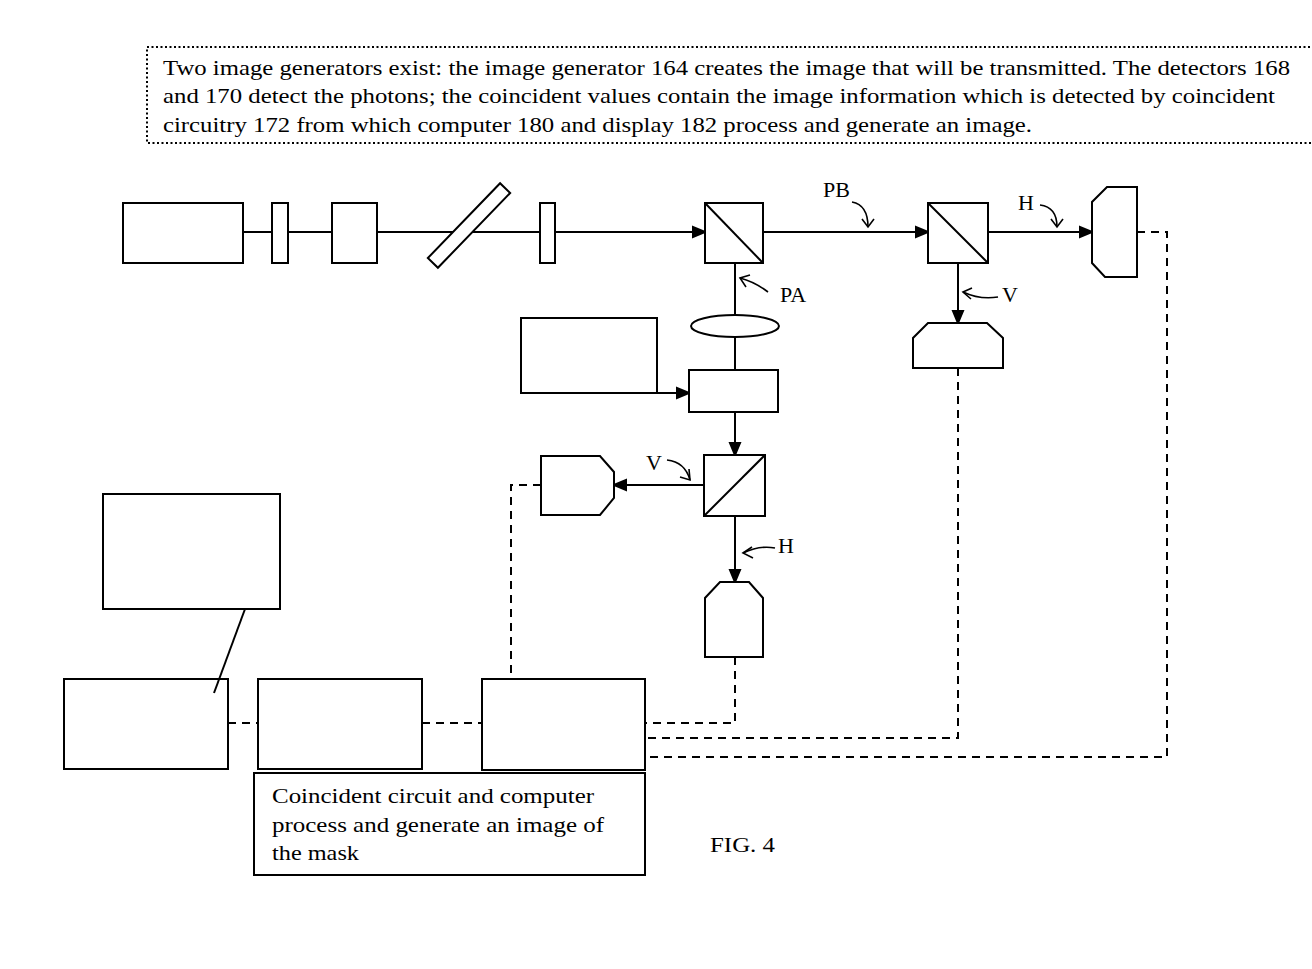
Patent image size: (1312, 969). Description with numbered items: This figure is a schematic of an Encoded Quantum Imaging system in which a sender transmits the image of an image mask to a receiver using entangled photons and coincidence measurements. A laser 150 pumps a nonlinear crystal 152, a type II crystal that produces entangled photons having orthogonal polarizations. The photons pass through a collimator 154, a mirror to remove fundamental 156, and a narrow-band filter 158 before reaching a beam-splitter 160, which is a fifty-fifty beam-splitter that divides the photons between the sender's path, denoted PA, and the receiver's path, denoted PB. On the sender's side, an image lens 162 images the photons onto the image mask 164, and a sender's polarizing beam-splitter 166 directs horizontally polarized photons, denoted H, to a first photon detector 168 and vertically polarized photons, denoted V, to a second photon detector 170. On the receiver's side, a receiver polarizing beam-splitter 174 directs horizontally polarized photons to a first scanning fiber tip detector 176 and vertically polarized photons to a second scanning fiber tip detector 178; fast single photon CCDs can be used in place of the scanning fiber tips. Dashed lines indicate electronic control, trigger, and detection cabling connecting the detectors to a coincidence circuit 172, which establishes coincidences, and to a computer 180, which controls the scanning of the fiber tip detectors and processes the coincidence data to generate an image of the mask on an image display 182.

The laser 150 is at (197, 245).
The nonlinear crystal 152 is at (278, 237).
The collimator 154 is at (347, 210).
The mirror to remove fundamental 156 is at (488, 212).
The narrow-band filter 158 is at (548, 222).
The beam-splitter 160 is at (750, 223).
The image lens 162 is at (718, 320).
The image mask 164 is at (763, 380).
The sender's polarizing beam-splitter 166 is at (765, 485).
The first photon detector 168 is at (750, 602).
The second photon detector 170 is at (555, 472).
The coincidence circuit 172 is at (555, 695).
The receiver polarizing beam-splitter 174 is at (977, 218).
The first scanning fiber tip detector 176 is at (1122, 220).
The second scanning fiber tip detector 178 is at (988, 335).
The computer 180 is at (362, 695).
The image display 182 is at (200, 695).